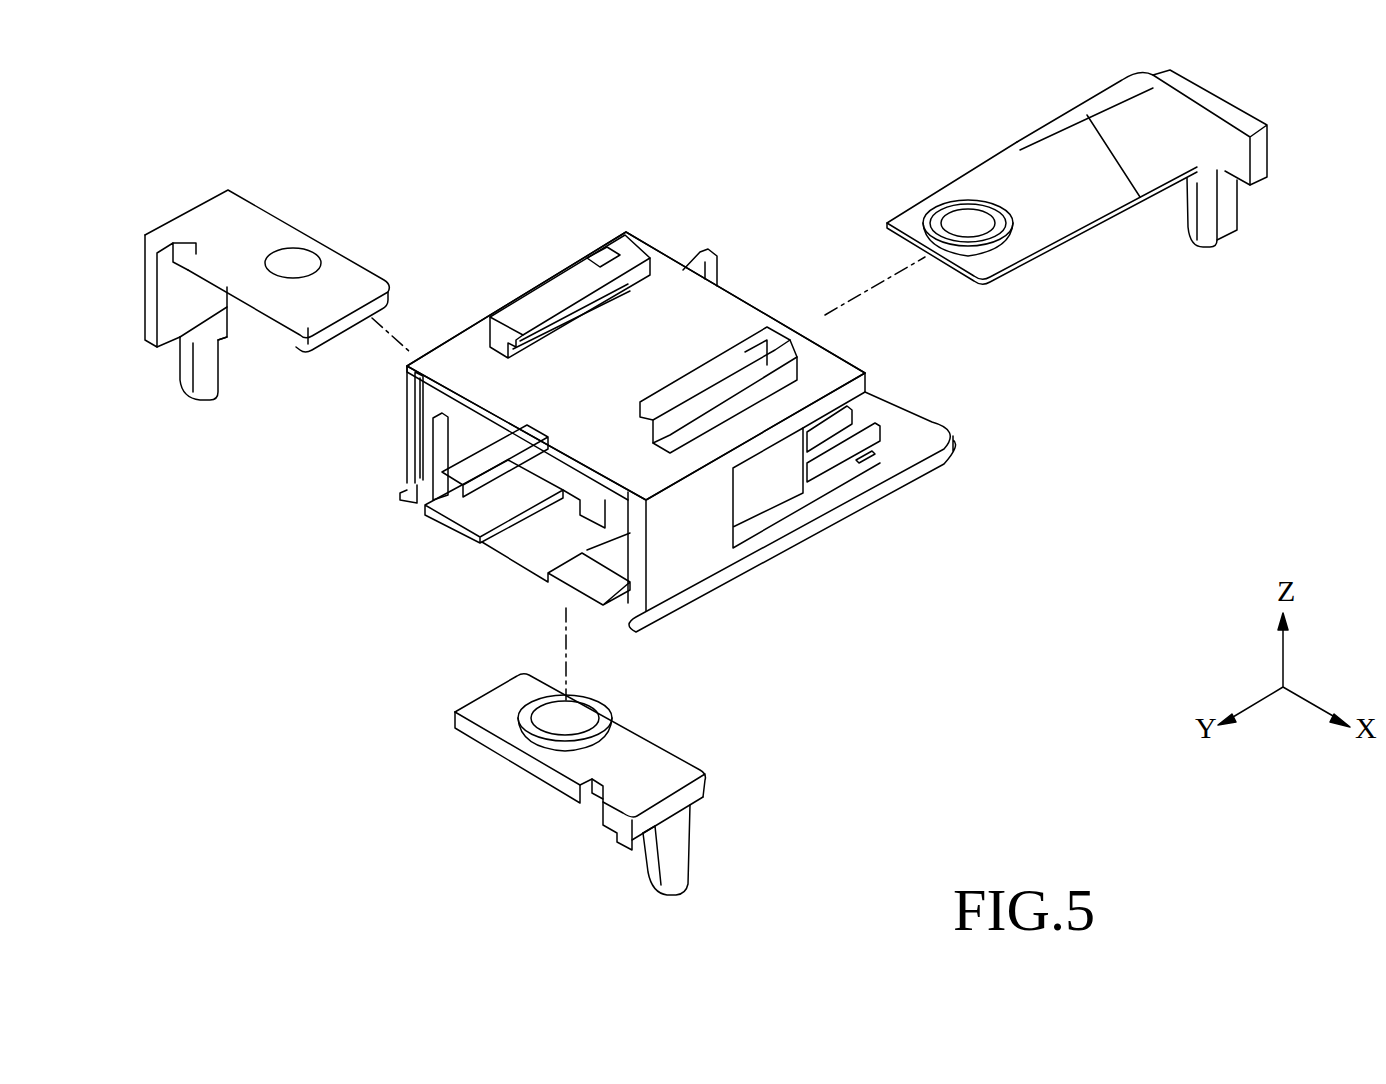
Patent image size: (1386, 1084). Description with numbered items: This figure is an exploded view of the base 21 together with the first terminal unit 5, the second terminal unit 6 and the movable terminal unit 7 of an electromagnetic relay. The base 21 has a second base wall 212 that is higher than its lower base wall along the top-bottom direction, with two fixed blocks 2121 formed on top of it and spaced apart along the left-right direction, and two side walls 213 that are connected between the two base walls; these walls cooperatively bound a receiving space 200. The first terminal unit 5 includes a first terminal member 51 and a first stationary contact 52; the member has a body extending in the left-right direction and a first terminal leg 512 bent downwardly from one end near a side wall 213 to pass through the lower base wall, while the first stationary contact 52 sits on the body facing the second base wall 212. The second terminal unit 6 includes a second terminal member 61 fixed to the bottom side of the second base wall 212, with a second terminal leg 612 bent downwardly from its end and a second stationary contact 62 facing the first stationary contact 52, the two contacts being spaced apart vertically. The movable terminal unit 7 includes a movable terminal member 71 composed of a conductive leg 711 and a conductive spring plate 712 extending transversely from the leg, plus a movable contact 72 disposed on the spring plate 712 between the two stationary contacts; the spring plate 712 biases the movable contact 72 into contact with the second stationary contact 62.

The first terminal unit 5 is at (598, 788).
The first terminal member 51 is at (485, 718).
The first terminal leg 512 is at (687, 888).
The first stationary contact 52 is at (582, 718).
The second terminal unit 6 is at (269, 293).
The second terminal member 61 is at (338, 252).
The second terminal leg 612 is at (173, 377).
The second stationary contact 62 is at (290, 268).
The movable terminal unit 7 is at (1102, 214).
The movable terminal member 71 is at (1225, 102).
The conductive leg 711 is at (1223, 230).
The conductive spring plate 712 is at (982, 190).
The movable contact 72 is at (977, 225).
The base 21 is at (795, 550).
The second base wall 212 is at (462, 330).
The fixed block 2121 is at (548, 295).
The side wall 213 is at (405, 432).
The receiving space 200 is at (535, 538).